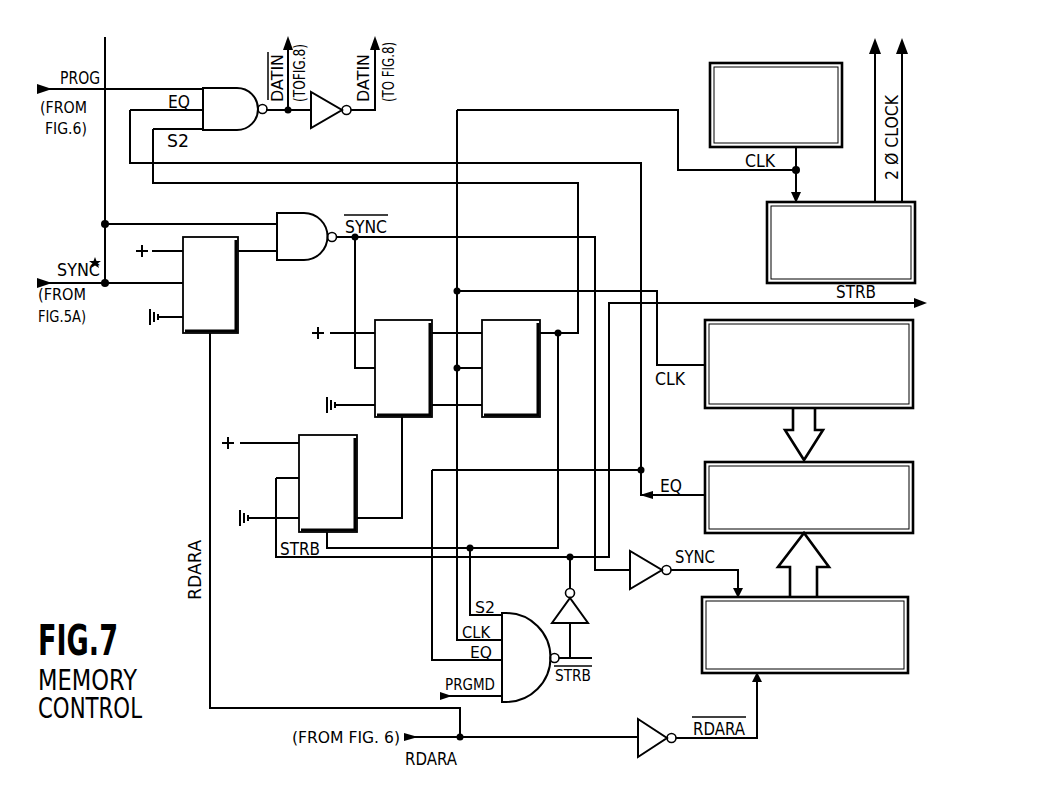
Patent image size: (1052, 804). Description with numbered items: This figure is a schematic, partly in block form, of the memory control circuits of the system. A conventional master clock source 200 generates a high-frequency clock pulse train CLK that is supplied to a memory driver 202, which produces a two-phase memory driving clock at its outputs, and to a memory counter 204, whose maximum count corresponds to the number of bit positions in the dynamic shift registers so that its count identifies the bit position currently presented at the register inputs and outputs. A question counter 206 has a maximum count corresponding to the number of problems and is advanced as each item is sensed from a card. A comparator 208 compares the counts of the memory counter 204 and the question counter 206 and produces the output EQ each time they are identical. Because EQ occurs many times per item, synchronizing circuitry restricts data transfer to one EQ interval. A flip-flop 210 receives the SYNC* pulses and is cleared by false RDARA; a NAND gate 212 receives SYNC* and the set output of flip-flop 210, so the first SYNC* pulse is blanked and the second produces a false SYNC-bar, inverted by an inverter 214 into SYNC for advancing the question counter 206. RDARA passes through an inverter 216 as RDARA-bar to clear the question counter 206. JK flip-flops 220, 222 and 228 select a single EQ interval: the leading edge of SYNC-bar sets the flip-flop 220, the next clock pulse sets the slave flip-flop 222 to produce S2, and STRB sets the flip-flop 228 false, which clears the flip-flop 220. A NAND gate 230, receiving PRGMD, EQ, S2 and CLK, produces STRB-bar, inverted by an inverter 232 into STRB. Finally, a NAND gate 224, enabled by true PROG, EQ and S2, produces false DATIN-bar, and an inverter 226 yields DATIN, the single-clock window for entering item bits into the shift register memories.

The master clock source 200 is at (710, 64).
The memory driver 202 is at (767, 204).
The memory counter 204 is at (705, 321).
The question counter 206 is at (702, 628).
The comparator 208 is at (705, 463).
The flip-flop 210 is at (238, 298).
The NAND gate 212 is at (336, 214).
The inverter 214 is at (650, 580).
The inverter 216 is at (652, 710).
The flip-flop 220 is at (402, 320).
The flip-flop 222 is at (515, 320).
The NAND gate 224 is at (242, 88).
The inverter 226 is at (328, 120).
The flip-flop 228 is at (357, 481).
The NAND gate 230 is at (524, 700).
The inverter 232 is at (560, 611).